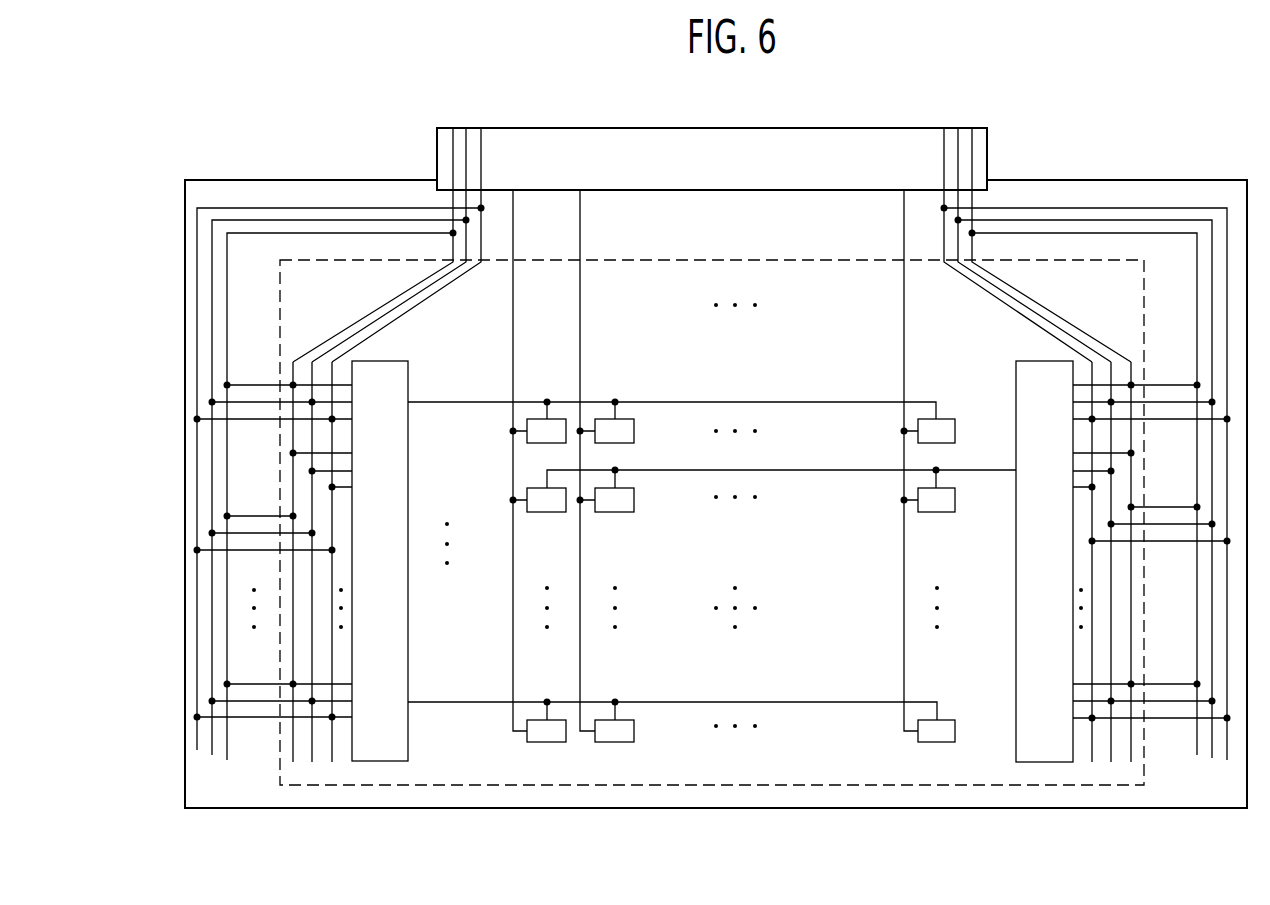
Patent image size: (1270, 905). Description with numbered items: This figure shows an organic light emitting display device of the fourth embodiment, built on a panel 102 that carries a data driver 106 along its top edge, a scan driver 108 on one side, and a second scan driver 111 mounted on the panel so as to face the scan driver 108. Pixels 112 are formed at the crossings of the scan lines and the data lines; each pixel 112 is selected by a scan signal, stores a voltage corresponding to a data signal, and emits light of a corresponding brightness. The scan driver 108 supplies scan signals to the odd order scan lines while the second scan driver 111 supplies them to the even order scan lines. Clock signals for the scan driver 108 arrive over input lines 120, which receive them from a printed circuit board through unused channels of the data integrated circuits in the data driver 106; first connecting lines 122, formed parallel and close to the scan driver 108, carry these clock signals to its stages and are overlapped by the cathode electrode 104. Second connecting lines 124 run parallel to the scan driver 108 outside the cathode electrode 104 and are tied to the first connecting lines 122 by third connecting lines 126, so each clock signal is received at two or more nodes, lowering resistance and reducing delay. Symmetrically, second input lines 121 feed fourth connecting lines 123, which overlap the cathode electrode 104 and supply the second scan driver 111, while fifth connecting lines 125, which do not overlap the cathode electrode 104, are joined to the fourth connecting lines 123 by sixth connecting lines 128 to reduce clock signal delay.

The panel 102 is at (1105, 180).
The cathode electrode 104 is at (783, 260).
The data driver 106 is at (818, 128).
The scan driver 108 is at (380, 762).
The second scan driver 111 is at (1040, 762).
The pixel 112 is at (947, 420).
The input lines 120 is at (481, 140).
The second input lines 121 is at (972, 140).
The first connecting lines 122 is at (332, 762).
The fourth connecting lines 123 is at (1131, 762).
The second connecting lines 124 is at (227, 760).
The fifth connecting lines 125 is at (1227, 760).
The third connecting lines 126 is at (256, 385).
The sixth connecting lines 128 is at (1172, 385).